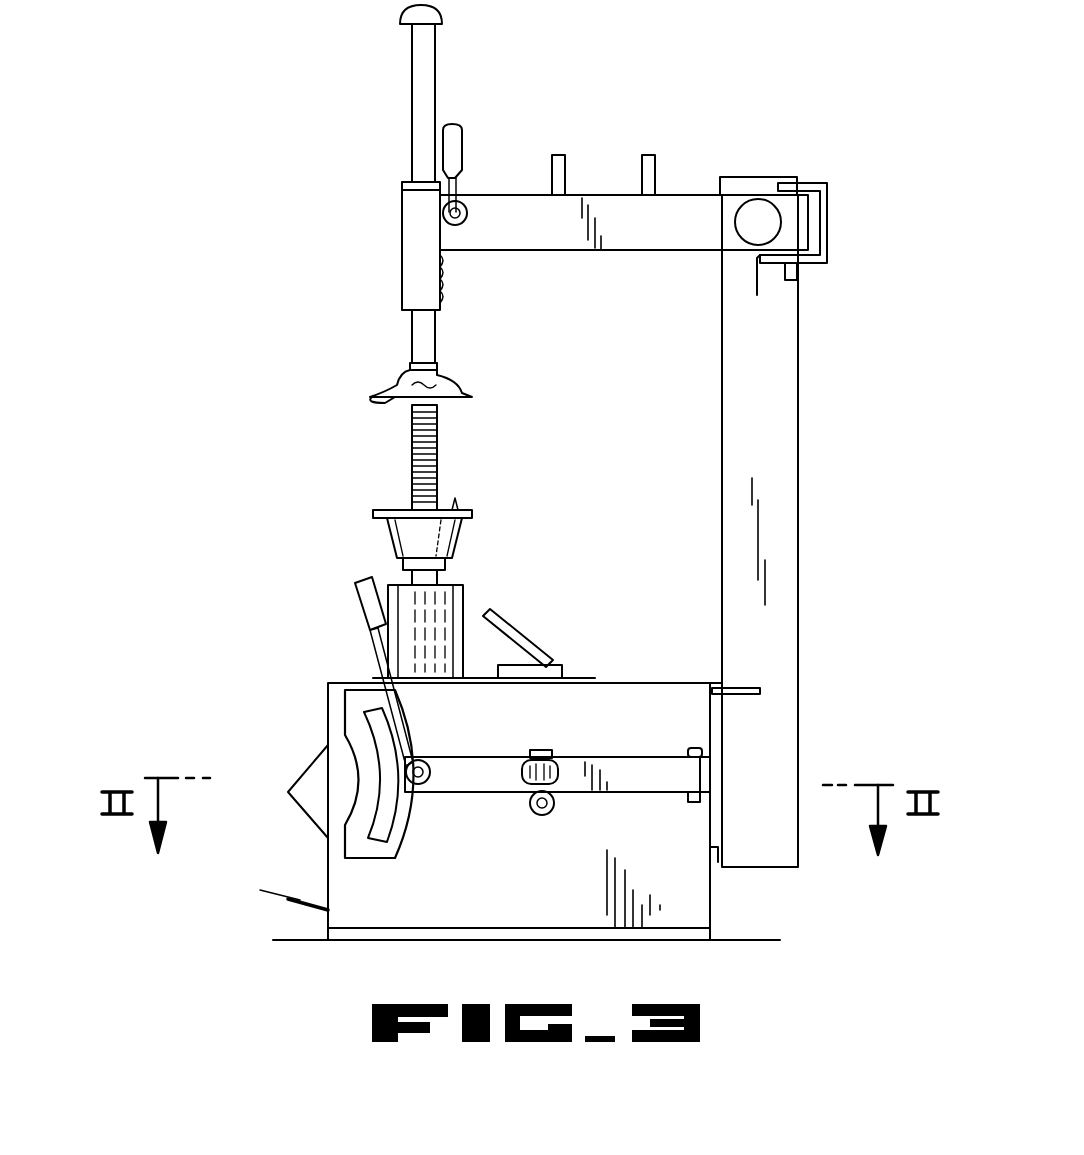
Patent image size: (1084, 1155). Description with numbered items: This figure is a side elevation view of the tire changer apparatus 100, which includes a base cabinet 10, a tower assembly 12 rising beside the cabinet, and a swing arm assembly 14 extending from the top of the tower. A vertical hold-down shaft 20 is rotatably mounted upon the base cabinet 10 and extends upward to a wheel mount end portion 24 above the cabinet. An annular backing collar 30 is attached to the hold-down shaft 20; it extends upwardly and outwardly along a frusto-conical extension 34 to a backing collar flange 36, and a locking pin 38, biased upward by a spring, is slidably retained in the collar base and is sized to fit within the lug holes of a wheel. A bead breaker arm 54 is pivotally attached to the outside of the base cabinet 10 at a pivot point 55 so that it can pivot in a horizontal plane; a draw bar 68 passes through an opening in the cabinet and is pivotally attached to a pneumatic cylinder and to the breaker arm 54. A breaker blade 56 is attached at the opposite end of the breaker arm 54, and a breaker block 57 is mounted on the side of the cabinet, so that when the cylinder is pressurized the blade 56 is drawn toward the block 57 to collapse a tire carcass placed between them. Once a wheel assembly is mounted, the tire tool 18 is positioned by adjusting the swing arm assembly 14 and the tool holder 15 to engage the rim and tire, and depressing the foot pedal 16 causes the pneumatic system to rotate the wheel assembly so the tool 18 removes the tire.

The tire changer apparatus 100 is at (712, 76).
The base cabinet 10 is at (655, 682).
The tower assembly 12 is at (770, 398).
The swing arm assembly 14 is at (669, 222).
The tool holder 15 is at (425, 330).
The foot pedal 16 is at (290, 900).
The tire tool 18 is at (445, 390).
The hold-down shaft 20 is at (433, 582).
The wheel mount end portion 24 is at (428, 415).
The backing collar 30 is at (488, 513).
The frusto-conical extension 34 is at (410, 539).
The backing collar flange 36 is at (382, 515).
The locking pin 38 is at (455, 511).
The bead breaker arm 54 is at (490, 782).
The pivot point 55 is at (695, 748).
The breaker blade 56 is at (392, 742).
The breaker block 57 is at (350, 700).
The draw bar 68 is at (553, 760).